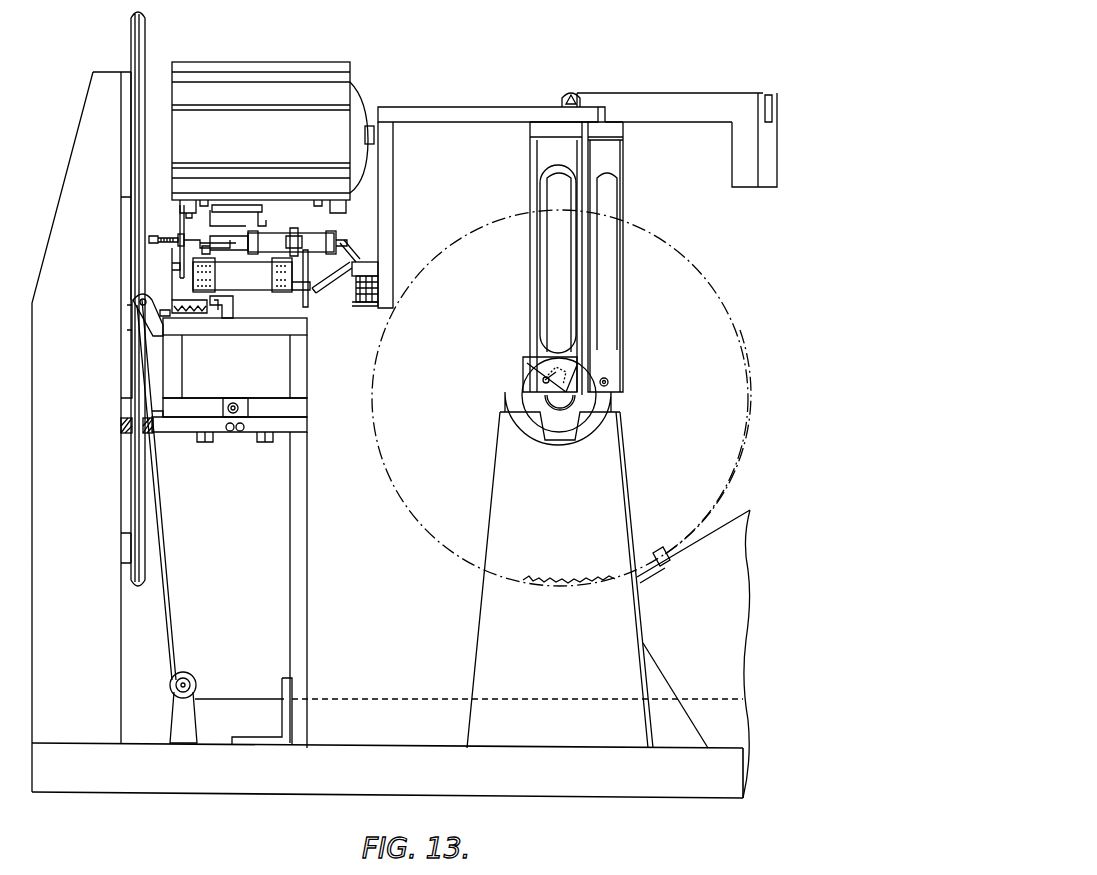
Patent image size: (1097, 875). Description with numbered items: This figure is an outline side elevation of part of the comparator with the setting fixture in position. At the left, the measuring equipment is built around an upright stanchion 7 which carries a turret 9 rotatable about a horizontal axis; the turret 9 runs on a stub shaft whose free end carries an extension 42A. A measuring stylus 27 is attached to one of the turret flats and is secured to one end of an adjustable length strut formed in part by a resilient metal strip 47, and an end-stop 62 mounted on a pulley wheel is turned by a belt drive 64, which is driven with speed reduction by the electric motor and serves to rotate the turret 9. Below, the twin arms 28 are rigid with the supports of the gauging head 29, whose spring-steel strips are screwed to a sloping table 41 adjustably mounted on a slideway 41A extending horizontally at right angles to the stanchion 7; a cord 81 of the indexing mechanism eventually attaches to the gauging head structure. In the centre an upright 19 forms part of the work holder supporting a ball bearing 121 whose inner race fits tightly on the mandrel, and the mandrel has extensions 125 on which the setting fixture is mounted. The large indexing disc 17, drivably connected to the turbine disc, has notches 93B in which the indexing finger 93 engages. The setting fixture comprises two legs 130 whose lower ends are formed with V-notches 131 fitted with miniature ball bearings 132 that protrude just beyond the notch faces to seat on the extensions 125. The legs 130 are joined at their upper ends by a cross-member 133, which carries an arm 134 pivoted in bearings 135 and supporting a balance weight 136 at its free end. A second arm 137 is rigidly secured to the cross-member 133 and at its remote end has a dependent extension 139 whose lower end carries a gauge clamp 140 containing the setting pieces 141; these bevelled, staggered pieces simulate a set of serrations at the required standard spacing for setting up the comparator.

The upright stanchion 7 is at (76, 658).
The turret 9 is at (311, 53).
The indexing disc 17 is at (698, 272).
The upright 19 is at (553, 669).
The measuring stylus 27 is at (352, 258).
The twin arms 28 is at (322, 283).
The gauging head 29 is at (230, 285).
The sloping table 41 is at (226, 328).
The slideway 41A is at (175, 434).
The extension 42A is at (370, 126).
The resilient metal strip 47 is at (272, 238).
The end-stop 62 is at (163, 236).
The belt drive 64 is at (140, 52).
The cord 81 is at (367, 699).
The indexing finger 93 is at (665, 565).
The notches 93B is at (657, 551).
The ball bearing 121 is at (598, 400).
The extensions 125 is at (562, 400).
The legs 130 is at (537, 197).
The V-notches 131 is at (590, 378).
The miniature ball bearings 132 is at (610, 381).
The cross-member 133 is at (548, 127).
The arm 134 is at (683, 104).
The bearings 135 is at (571, 92).
The balance weight 136 is at (745, 175).
The second arm 137 is at (478, 112).
The dependent extension 139 is at (387, 178).
The gauge clamp 140 is at (376, 272).
The setting pieces 141 is at (369, 305).